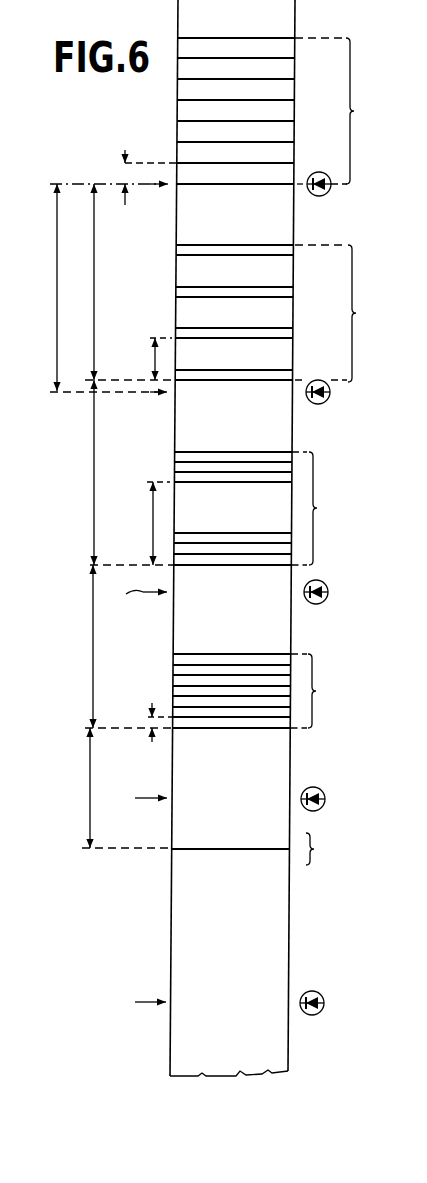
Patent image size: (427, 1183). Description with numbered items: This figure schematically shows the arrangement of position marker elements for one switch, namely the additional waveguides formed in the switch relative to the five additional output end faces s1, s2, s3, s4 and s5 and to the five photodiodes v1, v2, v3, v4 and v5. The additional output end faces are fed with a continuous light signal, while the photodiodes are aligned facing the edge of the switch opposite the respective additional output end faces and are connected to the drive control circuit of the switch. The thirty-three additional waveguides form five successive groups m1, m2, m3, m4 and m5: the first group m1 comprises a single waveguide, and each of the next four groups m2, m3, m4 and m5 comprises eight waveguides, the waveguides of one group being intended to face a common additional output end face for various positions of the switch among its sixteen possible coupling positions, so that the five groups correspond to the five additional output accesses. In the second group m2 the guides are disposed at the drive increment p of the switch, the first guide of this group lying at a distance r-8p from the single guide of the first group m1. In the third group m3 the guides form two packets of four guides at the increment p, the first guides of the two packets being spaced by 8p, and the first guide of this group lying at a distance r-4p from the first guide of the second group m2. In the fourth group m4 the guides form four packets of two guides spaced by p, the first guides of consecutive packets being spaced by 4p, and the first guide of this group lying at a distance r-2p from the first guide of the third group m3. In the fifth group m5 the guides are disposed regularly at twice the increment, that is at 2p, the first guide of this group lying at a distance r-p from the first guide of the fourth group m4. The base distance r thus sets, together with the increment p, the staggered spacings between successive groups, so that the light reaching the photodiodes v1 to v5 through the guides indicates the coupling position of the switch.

The first group of additional waveguides m1 is at (263, 849).
The second group of additional waveguides m2 is at (263, 691).
The third group of additional waveguides m3 is at (265, 508).
The fourth group of additional waveguides m4 is at (284, 313).
The fifth group of additional waveguides m5 is at (286, 111).
The photodiode v1 is at (314, 991).
The photodiode v2 is at (313, 787).
The photodiode v3 is at (322, 603).
The photodiode v4 is at (318, 380).
The photodiode v5 is at (318, 172).
The additional output end face s1 is at (136, 1000).
The additional output end face s2 is at (143, 801).
The additional output end face s3 is at (133, 590).
The additional output end face s4 is at (152, 395).
The additional output end face s5 is at (150, 187).
The distance r is at (57, 292).
The distance r-p is at (94, 293).
The distance r-2p is at (94, 467).
The distance r-4p is at (93, 650).
The distance r-8p is at (90, 787).
The drive increment p is at (152, 718).
The spacing 2p is at (125, 175).
The spacing 4p is at (155, 358).
The spacing 8p is at (153, 516).